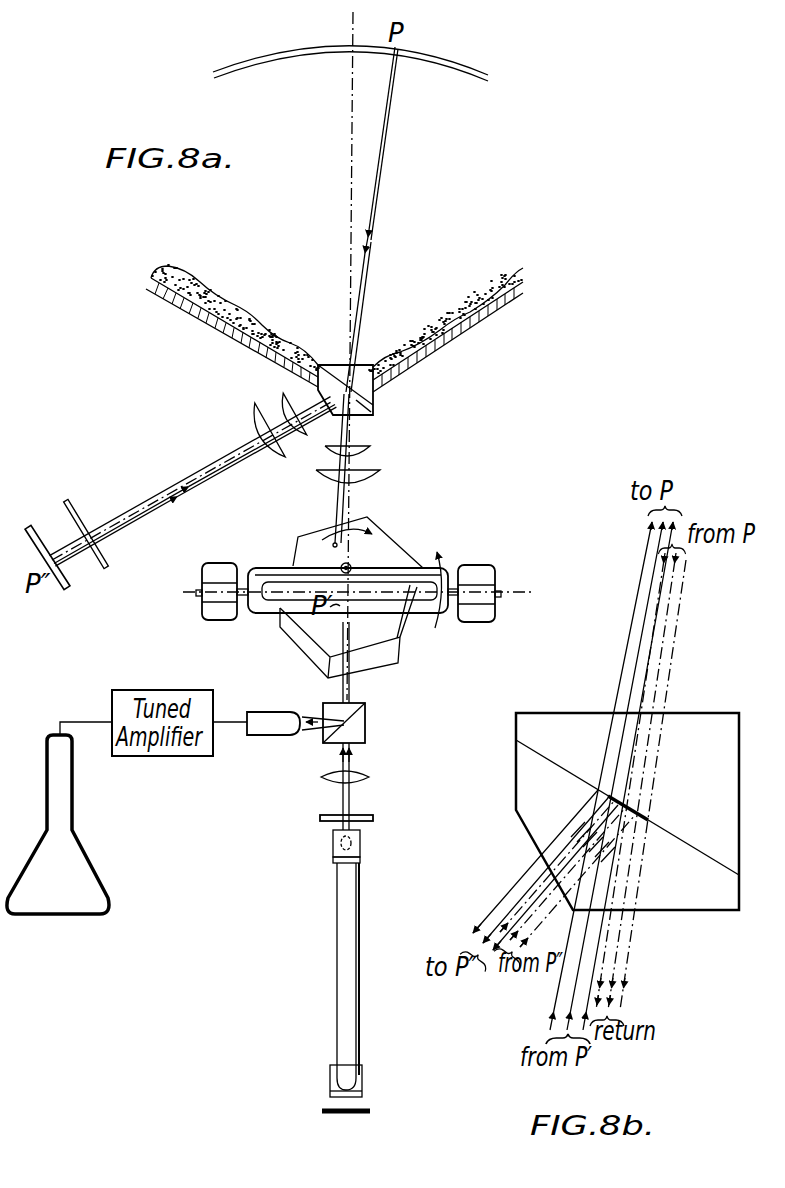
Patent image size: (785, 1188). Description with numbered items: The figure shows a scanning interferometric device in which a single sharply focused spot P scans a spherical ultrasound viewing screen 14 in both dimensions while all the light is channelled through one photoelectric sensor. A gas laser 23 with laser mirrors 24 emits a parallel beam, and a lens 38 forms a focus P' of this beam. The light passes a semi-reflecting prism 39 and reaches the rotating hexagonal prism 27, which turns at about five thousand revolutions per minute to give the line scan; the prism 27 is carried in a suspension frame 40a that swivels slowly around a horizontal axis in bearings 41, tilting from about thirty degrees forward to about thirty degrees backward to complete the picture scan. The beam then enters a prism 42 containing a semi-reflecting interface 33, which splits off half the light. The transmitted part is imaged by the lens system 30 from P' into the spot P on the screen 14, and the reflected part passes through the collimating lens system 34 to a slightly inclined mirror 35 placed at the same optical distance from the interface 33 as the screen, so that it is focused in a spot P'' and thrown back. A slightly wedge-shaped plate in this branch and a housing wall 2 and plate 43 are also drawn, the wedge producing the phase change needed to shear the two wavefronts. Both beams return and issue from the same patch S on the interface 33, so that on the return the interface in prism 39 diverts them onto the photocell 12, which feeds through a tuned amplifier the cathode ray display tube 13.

In FIG. 8A, the spherical ultrasound viewing screen 14 is at (452, 74).
In FIG. 8A, the housing wall 2 is at (205, 318).
In FIG. 8A, the semi-reflecting interface 33 is at (375, 397).
In FIG. 8B, the semi-reflecting interface 33 is at (717, 868).
In FIG. 8A, the prism 42 is at (365, 411).
In FIG. 8A, the lens system 30 is at (372, 449).
In FIG. 8A, the collimating lens system 34 is at (283, 396).
In FIG. 8A, the mirror 35 is at (32, 527).
In FIG. 8A, the compensating plate 43 is at (80, 522).
In FIG. 8A, the rotating polygonal prism 27 is at (386, 566).
In FIG. 8A, the bearings 41 is at (207, 604).
In FIG. 8A, the suspension frame 40a is at (296, 565).
In FIG. 8A, the photocell 12 is at (272, 736).
In FIG. 8A, the cathode ray display tube 13 is at (76, 862).
In FIG. 8A, the semi-reflecting prism 39 is at (366, 728).
In FIG. 8A, the lens 38 is at (367, 778).
In FIG. 8A, the laser mirrors 24 is at (323, 822).
In FIG. 8A, the gas laser 23 is at (338, 975).